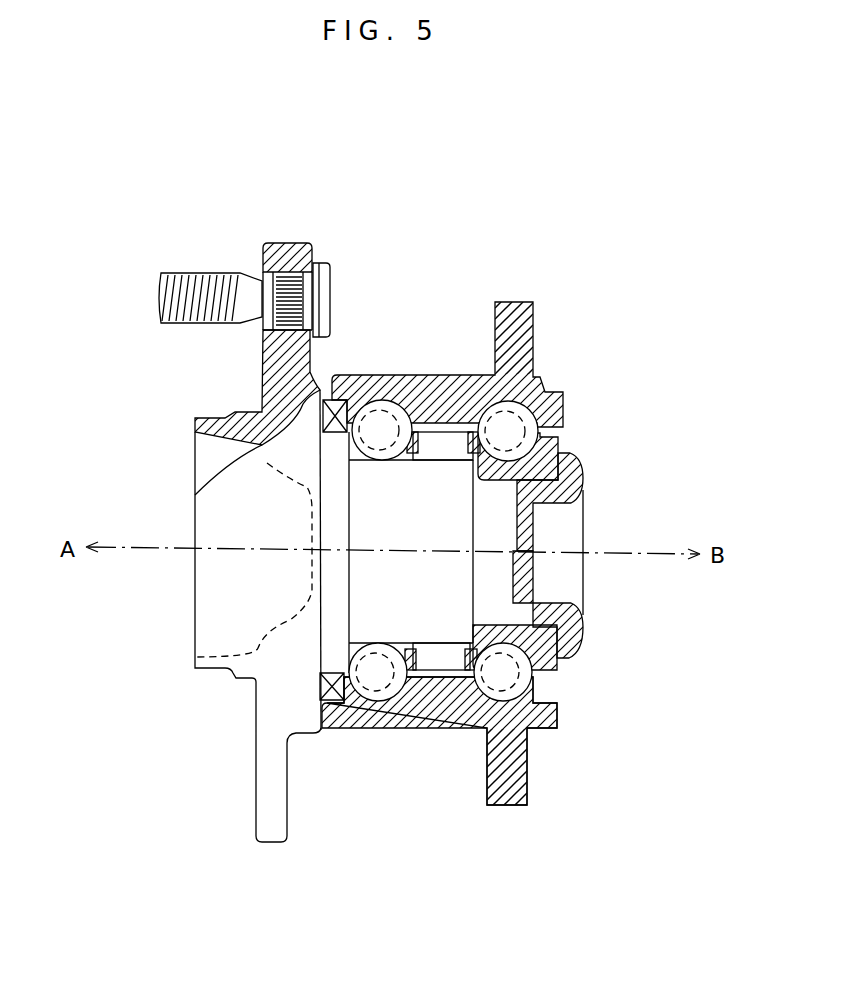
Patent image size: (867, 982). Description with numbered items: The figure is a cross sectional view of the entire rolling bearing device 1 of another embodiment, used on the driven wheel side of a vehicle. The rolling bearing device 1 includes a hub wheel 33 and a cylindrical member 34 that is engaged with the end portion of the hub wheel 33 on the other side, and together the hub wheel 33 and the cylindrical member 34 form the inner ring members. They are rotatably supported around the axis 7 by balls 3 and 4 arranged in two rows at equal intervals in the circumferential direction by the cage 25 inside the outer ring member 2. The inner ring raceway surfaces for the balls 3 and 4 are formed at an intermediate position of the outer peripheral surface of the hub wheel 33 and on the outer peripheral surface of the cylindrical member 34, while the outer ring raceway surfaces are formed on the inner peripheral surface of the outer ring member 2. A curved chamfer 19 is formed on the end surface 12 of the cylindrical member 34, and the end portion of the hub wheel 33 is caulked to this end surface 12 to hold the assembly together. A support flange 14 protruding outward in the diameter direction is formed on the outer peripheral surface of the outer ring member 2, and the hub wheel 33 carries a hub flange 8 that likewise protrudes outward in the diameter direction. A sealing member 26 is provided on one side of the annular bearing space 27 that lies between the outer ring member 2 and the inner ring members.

The rolling bearing device 1 is at (435, 362).
The outer ring member 2 is at (393, 392).
The balls 3 is at (372, 455).
The balls 4 is at (507, 408).
The axis 7 is at (161, 547).
The hub flange 8 is at (287, 242).
The end surface 12 is at (563, 442).
The support flange 14 is at (518, 302).
The curved chamfer 19 is at (583, 492).
The cage 25 is at (487, 457).
The sealing member 26 is at (324, 412).
The annular bearing space 27 is at (447, 662).
The hub wheel 33 is at (377, 602).
The cylindrical member 34 is at (545, 658).